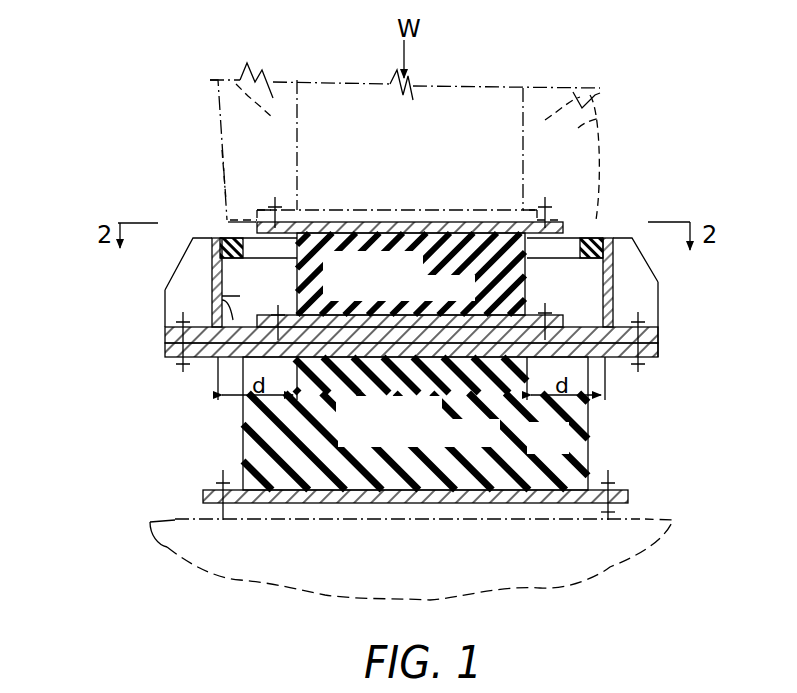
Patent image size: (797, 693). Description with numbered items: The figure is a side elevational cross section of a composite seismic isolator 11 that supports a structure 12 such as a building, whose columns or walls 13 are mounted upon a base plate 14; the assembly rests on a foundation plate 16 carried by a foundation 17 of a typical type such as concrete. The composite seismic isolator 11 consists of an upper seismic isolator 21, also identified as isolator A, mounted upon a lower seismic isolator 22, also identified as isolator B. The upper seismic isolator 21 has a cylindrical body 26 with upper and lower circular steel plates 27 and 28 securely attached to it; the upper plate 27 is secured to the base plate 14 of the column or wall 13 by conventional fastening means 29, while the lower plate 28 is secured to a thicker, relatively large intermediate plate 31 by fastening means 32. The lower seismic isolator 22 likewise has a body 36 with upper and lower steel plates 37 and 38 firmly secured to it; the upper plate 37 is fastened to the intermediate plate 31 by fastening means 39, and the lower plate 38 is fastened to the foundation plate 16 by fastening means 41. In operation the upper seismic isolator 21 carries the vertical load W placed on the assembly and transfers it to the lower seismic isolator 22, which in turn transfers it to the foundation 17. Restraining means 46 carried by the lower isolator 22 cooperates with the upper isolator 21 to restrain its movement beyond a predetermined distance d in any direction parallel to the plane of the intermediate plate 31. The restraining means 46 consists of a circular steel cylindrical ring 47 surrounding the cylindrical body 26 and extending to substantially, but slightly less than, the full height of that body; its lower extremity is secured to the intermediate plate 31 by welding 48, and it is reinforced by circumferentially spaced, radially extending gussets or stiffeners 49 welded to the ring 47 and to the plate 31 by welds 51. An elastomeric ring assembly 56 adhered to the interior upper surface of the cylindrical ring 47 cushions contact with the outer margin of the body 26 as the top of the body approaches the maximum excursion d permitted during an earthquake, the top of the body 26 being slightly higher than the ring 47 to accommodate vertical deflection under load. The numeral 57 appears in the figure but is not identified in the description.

The composite seismic isolator 11 is at (196, 405).
The structure 12 is at (220, 110).
The columns or walls 13 is at (248, 76).
The base plate 14 is at (560, 216).
The foundation plate 16 is at (203, 502).
The foundation 17 is at (411, 559).
The upper seismic isolator 21 is at (535, 272).
The lower seismic isolator 22 is at (592, 408).
The cylindrical body 26 is at (438, 222).
The upper plate 27 is at (620, 240).
The lower plate 28 is at (606, 324).
The fastening means 29 is at (546, 206).
The intermediate plate 31 is at (660, 340).
The fastening means 32 is at (548, 306).
The body 36 is at (548, 438).
The upper plate 37 is at (650, 366).
The lower plate 38 is at (626, 490).
The fastening means 39 is at (663, 477).
The fastening means 41 is at (222, 480).
The restraining means 46 is at (216, 168).
The cylindrical ring 47 is at (617, 286).
The welding 48 is at (212, 306).
The gussets or stiffeners 49 is at (195, 255).
The welds 51 is at (165, 322).
The ring assembly 56 is at (227, 226).
The spacer block 57 is at (212, 283).